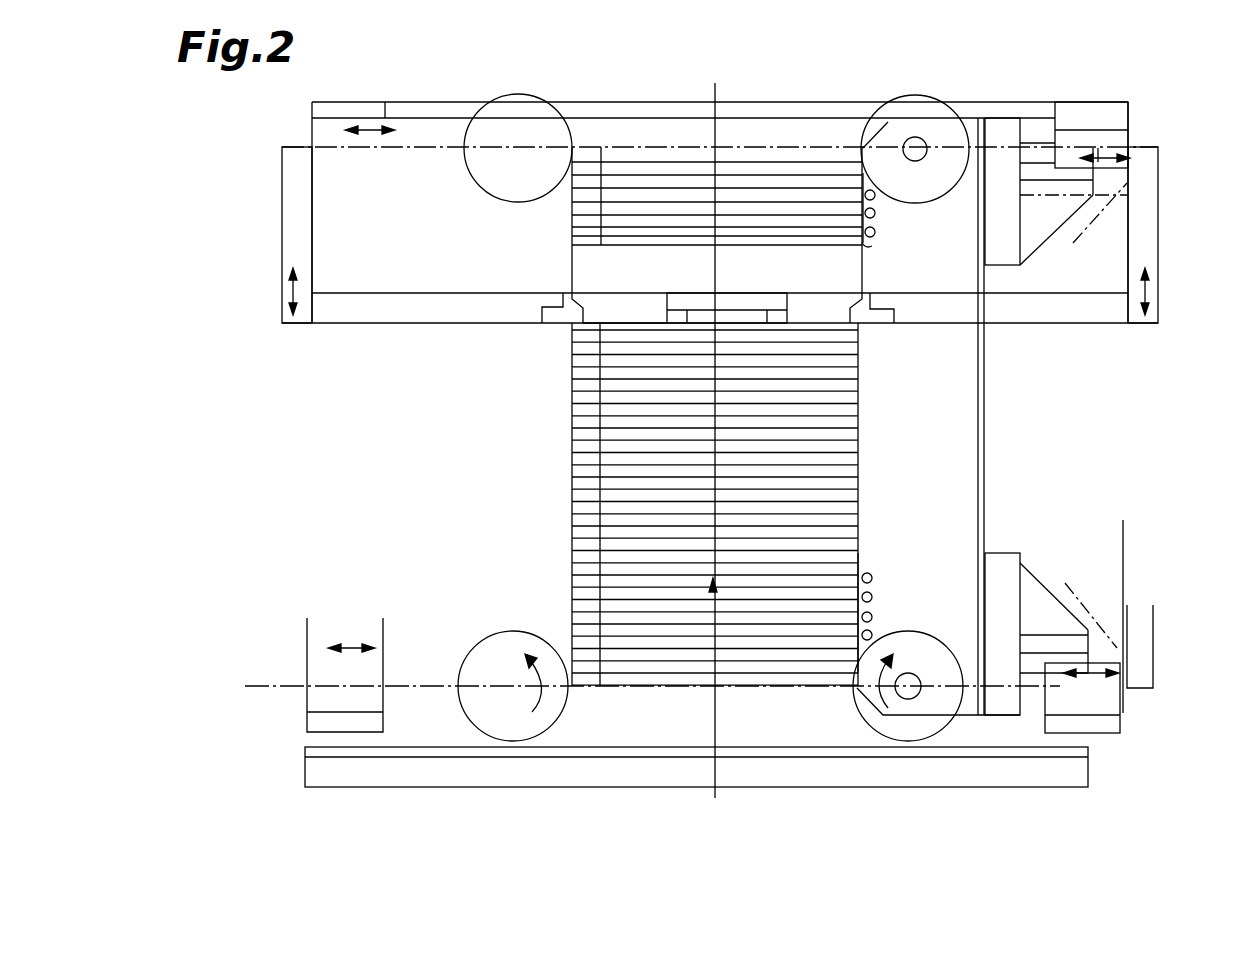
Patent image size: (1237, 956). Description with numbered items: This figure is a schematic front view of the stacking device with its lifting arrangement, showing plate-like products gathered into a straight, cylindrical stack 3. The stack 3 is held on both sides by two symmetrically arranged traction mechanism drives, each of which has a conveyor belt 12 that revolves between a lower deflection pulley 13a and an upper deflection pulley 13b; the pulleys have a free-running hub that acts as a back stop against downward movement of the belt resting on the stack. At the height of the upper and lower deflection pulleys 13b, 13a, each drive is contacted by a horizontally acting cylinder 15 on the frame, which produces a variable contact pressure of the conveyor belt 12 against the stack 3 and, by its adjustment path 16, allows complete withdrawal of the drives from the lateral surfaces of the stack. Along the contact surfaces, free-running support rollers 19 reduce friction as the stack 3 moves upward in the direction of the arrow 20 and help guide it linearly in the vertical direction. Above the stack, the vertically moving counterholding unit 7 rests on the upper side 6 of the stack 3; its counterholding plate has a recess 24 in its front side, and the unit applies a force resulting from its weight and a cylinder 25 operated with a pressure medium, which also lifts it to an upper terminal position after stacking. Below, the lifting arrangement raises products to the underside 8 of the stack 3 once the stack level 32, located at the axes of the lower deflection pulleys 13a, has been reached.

The stack 3 is at (787, 446).
The upper side of the stack 6 is at (623, 320).
The counterholding unit 7 is at (731, 165).
The underside of the stack 8 is at (690, 688).
The conveyor belt 12 is at (985, 417).
The lower deflection pulley 13a is at (533, 741).
The upper deflection pulley 13b is at (522, 94).
The horizontally acting cylinder 15 is at (1110, 130).
The adjustment path 16 is at (1105, 158).
The support rollers 19 is at (880, 595).
The arrow 20 is at (717, 628).
The recess 24 is at (700, 310).
The cylinder 25 is at (297, 238).
The stack level 32 is at (270, 680).